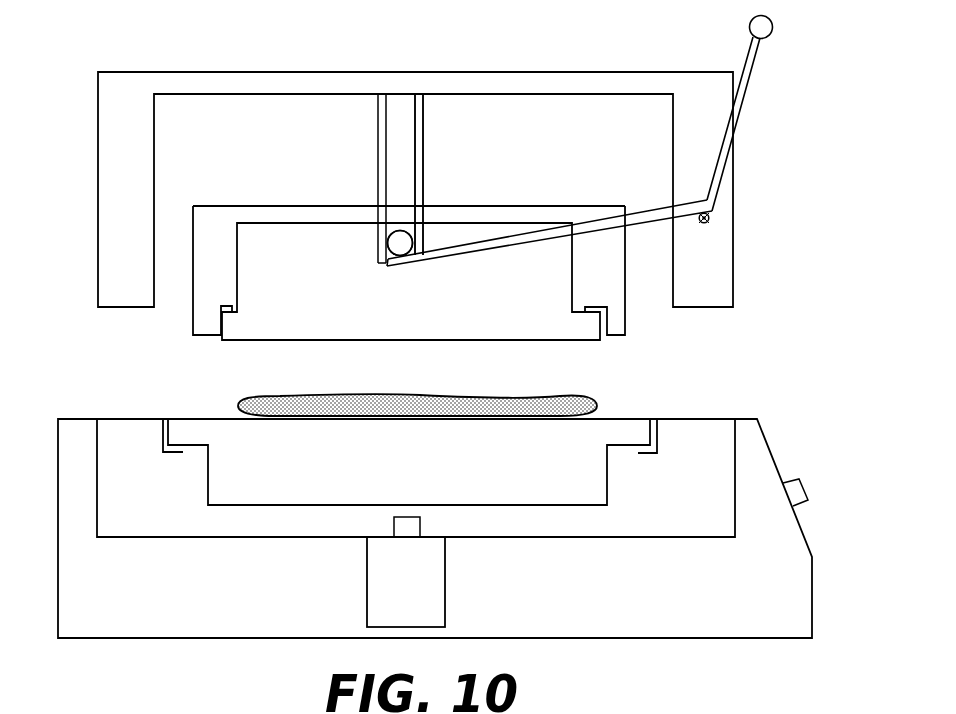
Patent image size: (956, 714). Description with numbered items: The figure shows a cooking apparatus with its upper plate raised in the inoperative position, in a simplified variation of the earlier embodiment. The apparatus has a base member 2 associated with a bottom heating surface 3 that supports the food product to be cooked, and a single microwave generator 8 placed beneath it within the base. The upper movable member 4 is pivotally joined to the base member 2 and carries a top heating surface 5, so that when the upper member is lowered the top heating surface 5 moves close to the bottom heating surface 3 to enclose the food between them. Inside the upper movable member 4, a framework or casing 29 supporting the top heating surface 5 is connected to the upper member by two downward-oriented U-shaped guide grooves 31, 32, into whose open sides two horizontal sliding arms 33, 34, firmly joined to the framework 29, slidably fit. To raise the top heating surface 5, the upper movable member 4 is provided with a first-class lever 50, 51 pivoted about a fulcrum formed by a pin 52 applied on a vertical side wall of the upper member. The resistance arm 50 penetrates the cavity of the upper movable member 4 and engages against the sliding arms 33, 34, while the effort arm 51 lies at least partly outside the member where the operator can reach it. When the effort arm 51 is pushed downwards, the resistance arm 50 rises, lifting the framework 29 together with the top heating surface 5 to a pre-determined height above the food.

The base member 2 is at (783, 592).
The bottom heating surface 3 is at (192, 432).
The upper movable member 4 is at (634, 85).
The top heating surface 5 is at (267, 317).
The microwave generator 8 is at (427, 607).
The framework or casing 29 is at (193, 257).
The guide groove 31 is at (425, 163).
The guide groove 32 is at (425, 163).
The sliding arm 33 is at (394, 243).
The sliding arm 34 is at (394, 243).
The resistance arm 50 is at (529, 247).
The effort arm 51 is at (751, 84).
The pin 52 is at (716, 213).